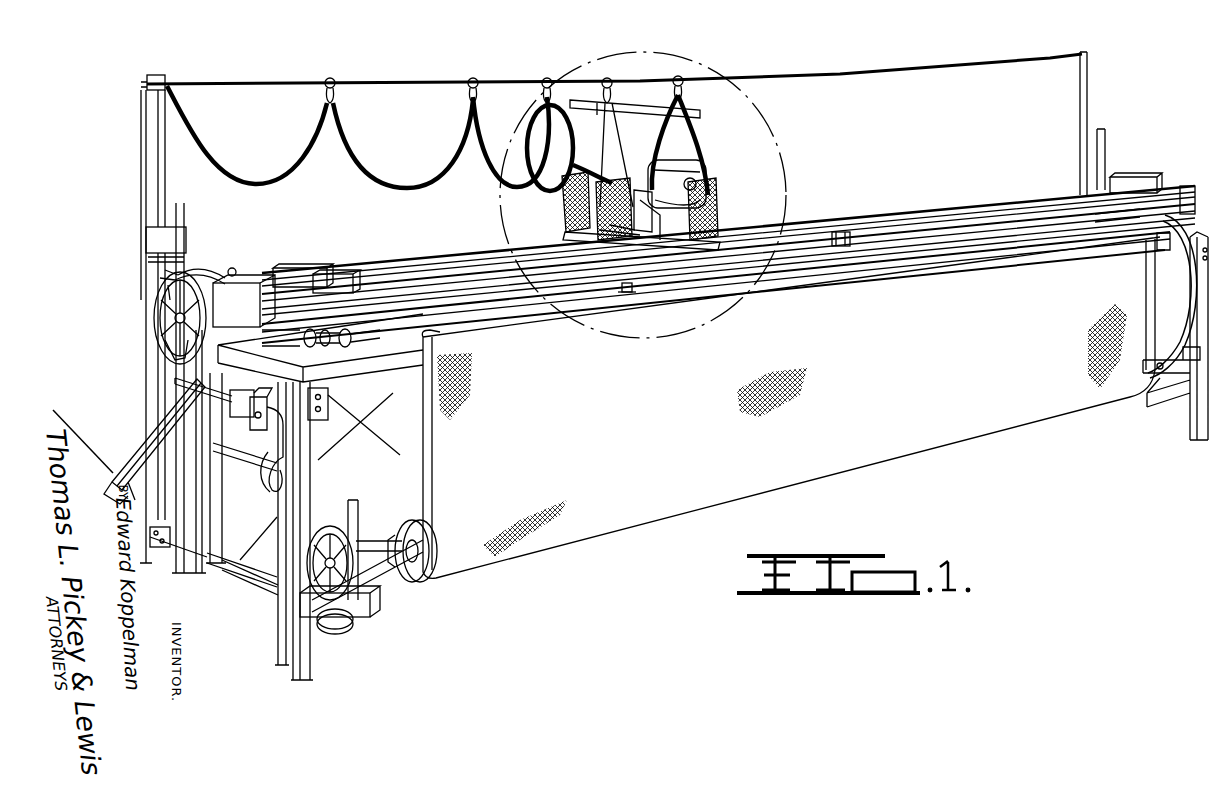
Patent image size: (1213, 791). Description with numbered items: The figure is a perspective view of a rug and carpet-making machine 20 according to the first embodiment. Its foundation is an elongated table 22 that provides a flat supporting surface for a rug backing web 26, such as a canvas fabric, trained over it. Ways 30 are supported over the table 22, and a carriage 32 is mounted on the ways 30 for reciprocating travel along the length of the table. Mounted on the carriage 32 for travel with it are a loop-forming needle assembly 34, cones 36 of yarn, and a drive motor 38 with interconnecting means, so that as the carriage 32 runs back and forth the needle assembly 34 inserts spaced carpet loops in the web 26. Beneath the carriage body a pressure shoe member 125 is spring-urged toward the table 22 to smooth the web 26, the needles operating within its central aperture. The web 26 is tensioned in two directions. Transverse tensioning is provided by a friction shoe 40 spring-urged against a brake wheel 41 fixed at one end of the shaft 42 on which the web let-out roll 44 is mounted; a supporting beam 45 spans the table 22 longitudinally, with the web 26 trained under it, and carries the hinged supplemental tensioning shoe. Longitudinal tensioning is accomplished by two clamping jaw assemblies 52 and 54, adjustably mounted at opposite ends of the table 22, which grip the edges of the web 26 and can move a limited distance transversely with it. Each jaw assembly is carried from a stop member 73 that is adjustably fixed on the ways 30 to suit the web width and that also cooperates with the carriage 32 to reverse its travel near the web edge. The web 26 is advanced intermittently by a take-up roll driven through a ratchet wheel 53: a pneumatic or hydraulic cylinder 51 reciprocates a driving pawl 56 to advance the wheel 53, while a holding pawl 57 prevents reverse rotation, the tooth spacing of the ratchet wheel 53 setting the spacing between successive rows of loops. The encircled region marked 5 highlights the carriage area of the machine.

The detail circle of sewing head 5 is at (696, 58).
The rug and carpet-making machine 20 is at (1086, 44).
The elongated table 22 is at (268, 372).
The rug backing web 26 is at (440, 461).
The ways 30 is at (372, 268).
The carriage 32 is at (732, 192).
The loop-forming needle assembly 34 is at (610, 302).
The cones of yarn 36 is at (563, 202).
The drive motor 38 is at (700, 180).
The friction shoe 40 is at (330, 520).
The brake wheel 41 is at (343, 622).
The shaft 42 is at (385, 580).
The web let-out roll 44 is at (394, 537).
The supporting beam 45 is at (974, 243).
The pneumatic or hydraulic cylinder 51 is at (250, 408).
The clamping jaw assembly 52 is at (331, 347).
The ratchet wheel 53 is at (153, 297).
The clamping jaw assembly 54 is at (1106, 221).
The driving pawl 56 is at (215, 386).
The holding pawl 57 is at (157, 273).
The stop member 73 is at (303, 257).
The pressure shoe member 125 is at (640, 293).